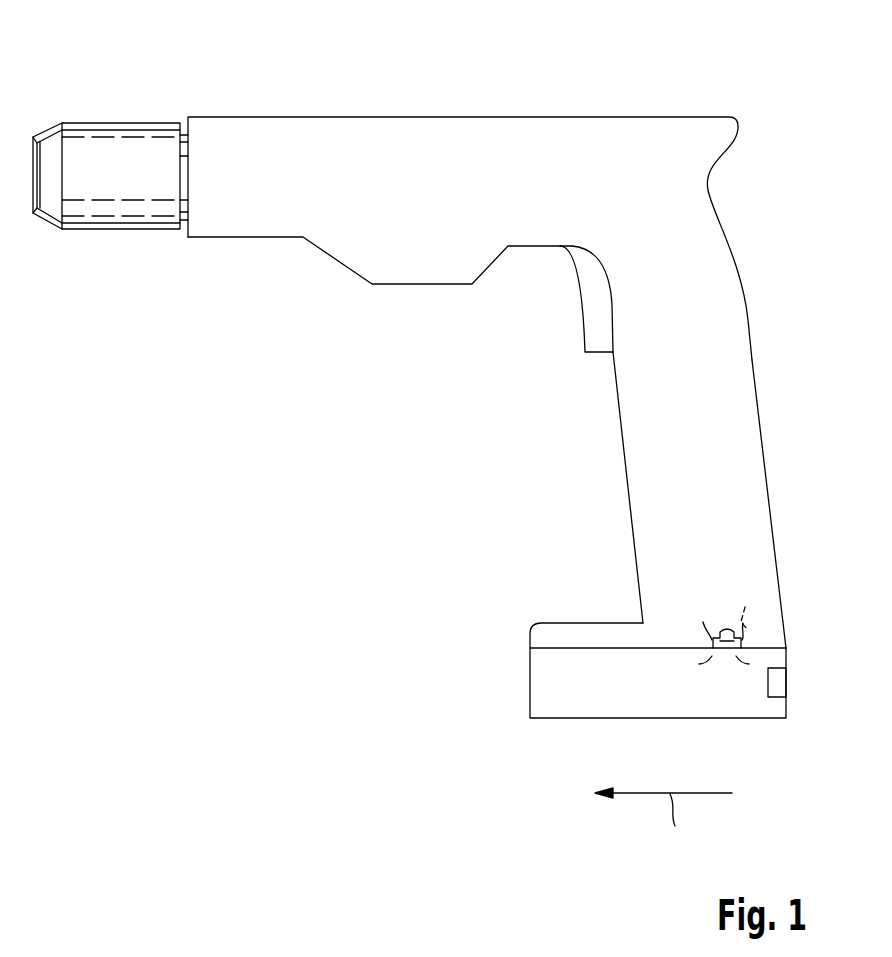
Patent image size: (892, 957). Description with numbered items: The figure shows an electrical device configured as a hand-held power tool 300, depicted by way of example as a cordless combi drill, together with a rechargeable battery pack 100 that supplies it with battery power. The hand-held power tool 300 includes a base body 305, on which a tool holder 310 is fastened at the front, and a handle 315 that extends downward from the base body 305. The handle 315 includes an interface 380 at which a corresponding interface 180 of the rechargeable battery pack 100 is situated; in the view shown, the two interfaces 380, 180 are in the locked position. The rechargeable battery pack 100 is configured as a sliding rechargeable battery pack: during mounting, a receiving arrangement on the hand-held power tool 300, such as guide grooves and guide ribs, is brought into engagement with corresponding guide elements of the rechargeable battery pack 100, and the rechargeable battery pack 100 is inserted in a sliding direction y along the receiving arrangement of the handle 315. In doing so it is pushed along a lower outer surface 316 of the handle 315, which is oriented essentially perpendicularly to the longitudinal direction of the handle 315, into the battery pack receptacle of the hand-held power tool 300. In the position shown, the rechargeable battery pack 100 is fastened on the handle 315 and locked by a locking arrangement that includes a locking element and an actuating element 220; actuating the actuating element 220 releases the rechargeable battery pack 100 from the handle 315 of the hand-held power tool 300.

The hand-held power tool 300 is at (683, 82).
The base body 305 is at (387, 140).
The tool holder 310 is at (120, 145).
The handle 315 is at (730, 338).
The lower outer surface 316 is at (574, 657).
The rechargeable battery pack 100 is at (677, 706).
The interface 180 is at (745, 637).
The actuating element 220 is at (778, 688).
The interface 380 is at (745, 607).